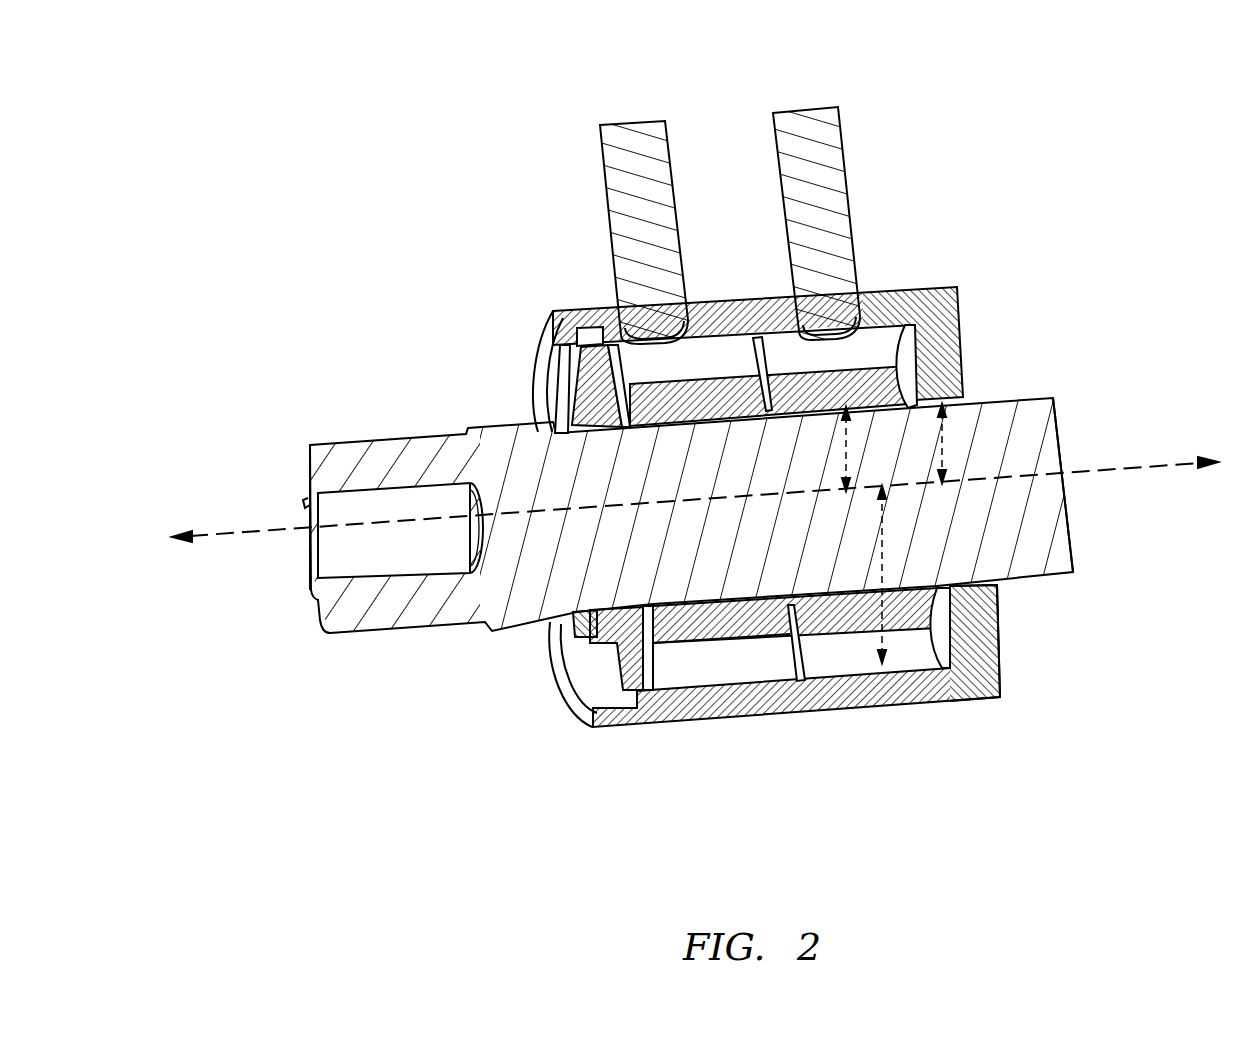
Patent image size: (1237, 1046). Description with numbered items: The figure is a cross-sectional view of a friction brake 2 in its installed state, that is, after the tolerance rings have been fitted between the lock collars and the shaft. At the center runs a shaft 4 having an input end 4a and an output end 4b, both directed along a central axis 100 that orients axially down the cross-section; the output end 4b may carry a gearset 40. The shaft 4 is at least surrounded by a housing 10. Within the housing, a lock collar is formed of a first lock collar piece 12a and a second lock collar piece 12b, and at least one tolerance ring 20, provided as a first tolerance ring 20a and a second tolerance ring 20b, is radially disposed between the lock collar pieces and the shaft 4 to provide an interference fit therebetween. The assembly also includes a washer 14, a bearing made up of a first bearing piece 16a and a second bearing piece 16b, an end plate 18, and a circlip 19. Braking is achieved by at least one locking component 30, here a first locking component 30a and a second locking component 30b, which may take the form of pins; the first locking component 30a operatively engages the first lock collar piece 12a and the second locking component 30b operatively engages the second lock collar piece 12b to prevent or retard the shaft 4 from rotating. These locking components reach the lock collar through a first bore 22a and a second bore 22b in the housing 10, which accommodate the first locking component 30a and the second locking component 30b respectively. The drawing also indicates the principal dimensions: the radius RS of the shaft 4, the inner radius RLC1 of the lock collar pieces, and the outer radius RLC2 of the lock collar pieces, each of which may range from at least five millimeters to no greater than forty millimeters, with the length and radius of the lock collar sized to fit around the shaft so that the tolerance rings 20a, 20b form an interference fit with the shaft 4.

The friction brake 2 is at (1172, 126).
The shaft 4 is at (1057, 412).
The input end 4a is at (1073, 432).
The output end 4b is at (310, 470).
The gearset 40 is at (381, 448).
The housing 10 is at (838, 707).
The first lock collar piece 12a is at (927, 700).
The second lock collar piece 12b is at (723, 717).
The washer 14 is at (775, 705).
The first bearing piece 16a is at (846, 441).
The second bearing piece 16b is at (590, 317).
The end plate 18 is at (571, 407).
The circlip 19 is at (554, 318).
The tolerance ring 20 is at (690, 720).
The first tolerance ring 20a is at (993, 700).
The second tolerance ring 20b is at (647, 711).
The first bore 22a is at (790, 298).
The second bore 22b is at (697, 303).
The locking component 30 is at (723, 193).
The first locking component 30a is at (815, 115).
The second locking component 30b is at (640, 130).
The central axis 100 is at (225, 540).
The radius of the shaft RS is at (903, 337).
The inner radius of the lock collar RLC1 is at (943, 440).
The outer radius of the lock collar RLC2 is at (887, 537).